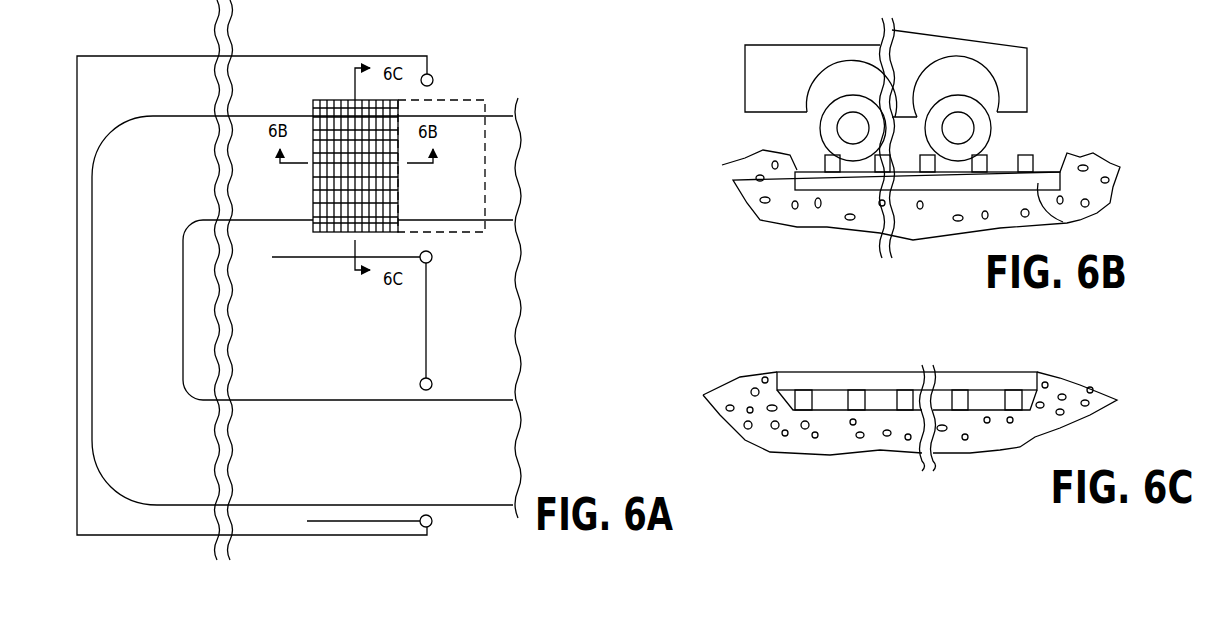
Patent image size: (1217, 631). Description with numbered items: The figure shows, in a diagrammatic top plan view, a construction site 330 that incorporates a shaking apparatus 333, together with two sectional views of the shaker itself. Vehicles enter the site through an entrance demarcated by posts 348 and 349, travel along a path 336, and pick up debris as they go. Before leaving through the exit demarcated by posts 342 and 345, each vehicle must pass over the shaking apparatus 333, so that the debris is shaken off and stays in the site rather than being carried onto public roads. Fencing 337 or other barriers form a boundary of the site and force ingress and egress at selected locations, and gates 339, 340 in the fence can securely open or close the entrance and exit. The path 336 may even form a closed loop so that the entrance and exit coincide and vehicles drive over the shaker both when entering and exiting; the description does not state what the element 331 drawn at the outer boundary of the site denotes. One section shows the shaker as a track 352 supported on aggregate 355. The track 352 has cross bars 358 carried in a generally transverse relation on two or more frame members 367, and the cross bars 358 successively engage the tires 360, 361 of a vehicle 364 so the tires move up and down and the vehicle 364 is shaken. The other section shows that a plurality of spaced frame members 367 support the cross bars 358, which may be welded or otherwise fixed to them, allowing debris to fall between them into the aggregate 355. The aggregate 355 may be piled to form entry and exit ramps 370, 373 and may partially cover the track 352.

In FIG. 6A, the construction site 330 is at (532, 398).
In FIG. 6A, the outer track loop 331 is at (247, 56).
In FIG. 6A, the shaking apparatus 333 is at (188, 87).
In FIG. 6A, the path 336 is at (92, 272).
In FIG. 6A, the fencing 337 is at (427, 303).
In FIG. 6A, the gate 339 is at (332, 258).
In FIG. 6A, the gate 340 is at (392, 525).
In FIG. 6A, the post 342 is at (432, 258).
In FIG. 6A, the post 345 is at (433, 78).
In FIG. 6A, the post 348 is at (432, 526).
In FIG. 6A, the post 349 is at (431, 380).
In FIG. 6B, the track 352 is at (1062, 106).
In FIG. 6C, the track 352 is at (1019, 365).
In FIG. 6B, the aggregate 355 is at (1103, 190).
In FIG. 6B, the cross bars 358 is at (832, 162).
In FIG. 6C, the cross bars 358 is at (866, 382).
In FIG. 6B, the tire 360 is at (987, 125).
In FIG. 6B, the tire 361 is at (850, 103).
In FIG. 6B, the vehicle 364 is at (955, 55).
In FIG. 6B, the frame members 367 is at (1063, 222).
In FIG. 6C, the frame members 367 is at (903, 402).
In FIG. 6B, the entry ramp 370 is at (745, 153).
In FIG. 6B, the exit ramp 373 is at (1095, 160).